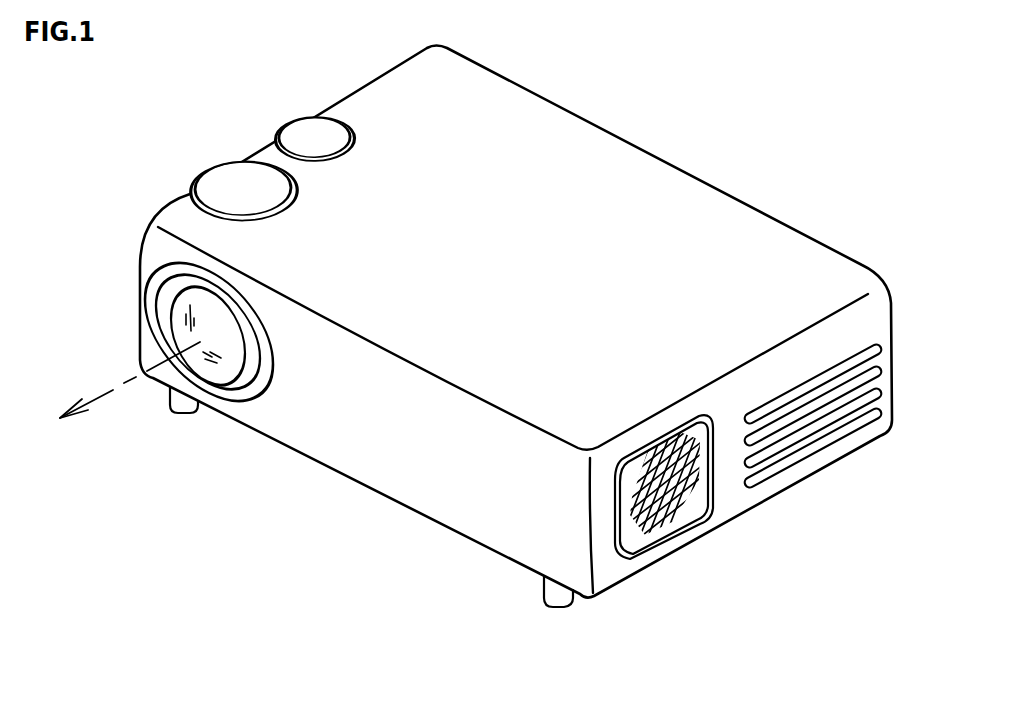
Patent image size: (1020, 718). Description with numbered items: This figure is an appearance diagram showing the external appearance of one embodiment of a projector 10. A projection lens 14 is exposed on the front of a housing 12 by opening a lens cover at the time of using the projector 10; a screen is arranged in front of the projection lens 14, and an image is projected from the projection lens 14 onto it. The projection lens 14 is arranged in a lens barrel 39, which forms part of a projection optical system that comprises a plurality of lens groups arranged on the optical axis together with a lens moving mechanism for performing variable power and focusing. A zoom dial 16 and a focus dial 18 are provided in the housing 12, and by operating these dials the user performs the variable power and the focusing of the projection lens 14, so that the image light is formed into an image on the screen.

The projector 10 is at (653, 124).
The housing 12 is at (322, 448).
The projection lens 14 is at (228, 370).
The zoom dial 16 is at (300, 133).
The focus dial 18 is at (220, 180).
The lens barrel 39 is at (263, 347).